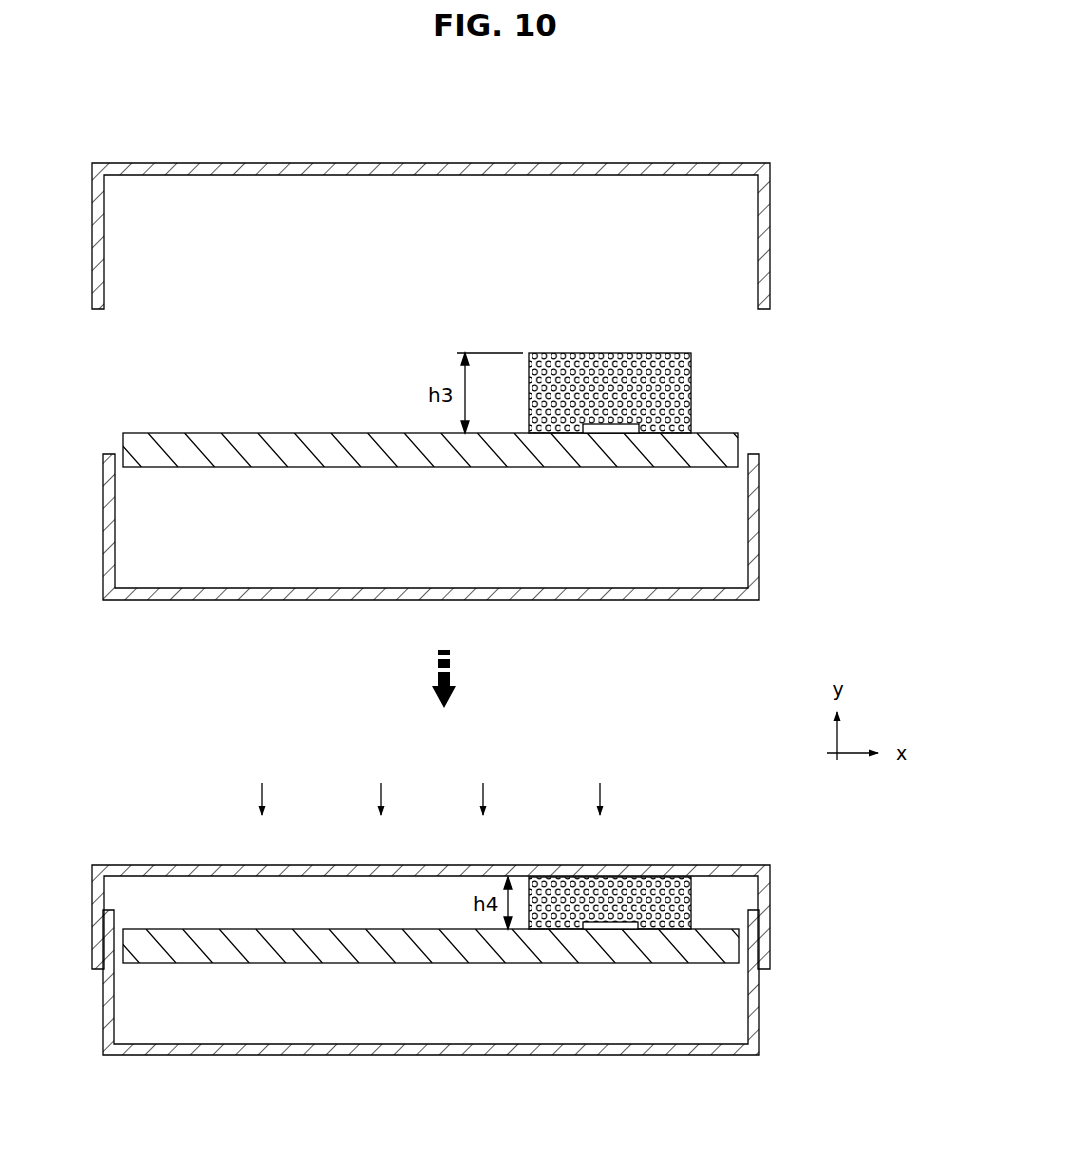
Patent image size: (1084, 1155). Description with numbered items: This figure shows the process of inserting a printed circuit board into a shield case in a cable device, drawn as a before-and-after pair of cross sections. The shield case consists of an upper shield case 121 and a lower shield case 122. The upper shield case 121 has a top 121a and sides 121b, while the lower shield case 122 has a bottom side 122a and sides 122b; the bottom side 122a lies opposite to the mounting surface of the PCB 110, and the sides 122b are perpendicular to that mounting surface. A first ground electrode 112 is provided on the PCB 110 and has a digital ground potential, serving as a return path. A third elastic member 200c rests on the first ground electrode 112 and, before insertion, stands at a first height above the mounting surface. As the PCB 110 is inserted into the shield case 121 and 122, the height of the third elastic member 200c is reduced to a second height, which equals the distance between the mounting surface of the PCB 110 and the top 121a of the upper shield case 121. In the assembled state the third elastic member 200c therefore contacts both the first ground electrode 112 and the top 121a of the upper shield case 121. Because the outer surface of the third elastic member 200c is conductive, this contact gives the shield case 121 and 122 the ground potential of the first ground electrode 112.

The PCB 110 is at (279, 432).
The first ground electrode 112 is at (614, 436).
The upper shield case 121 is at (779, 256).
The top of the upper shield case 121a is at (678, 167).
The side of the upper shield case 121b is at (766, 205).
The lower shield case 122 is at (778, 519).
The bottom side of the lower shield case 122a is at (664, 592).
The sides of the lower shield case 122b is at (757, 484).
The third elastic member 200c is at (603, 345).